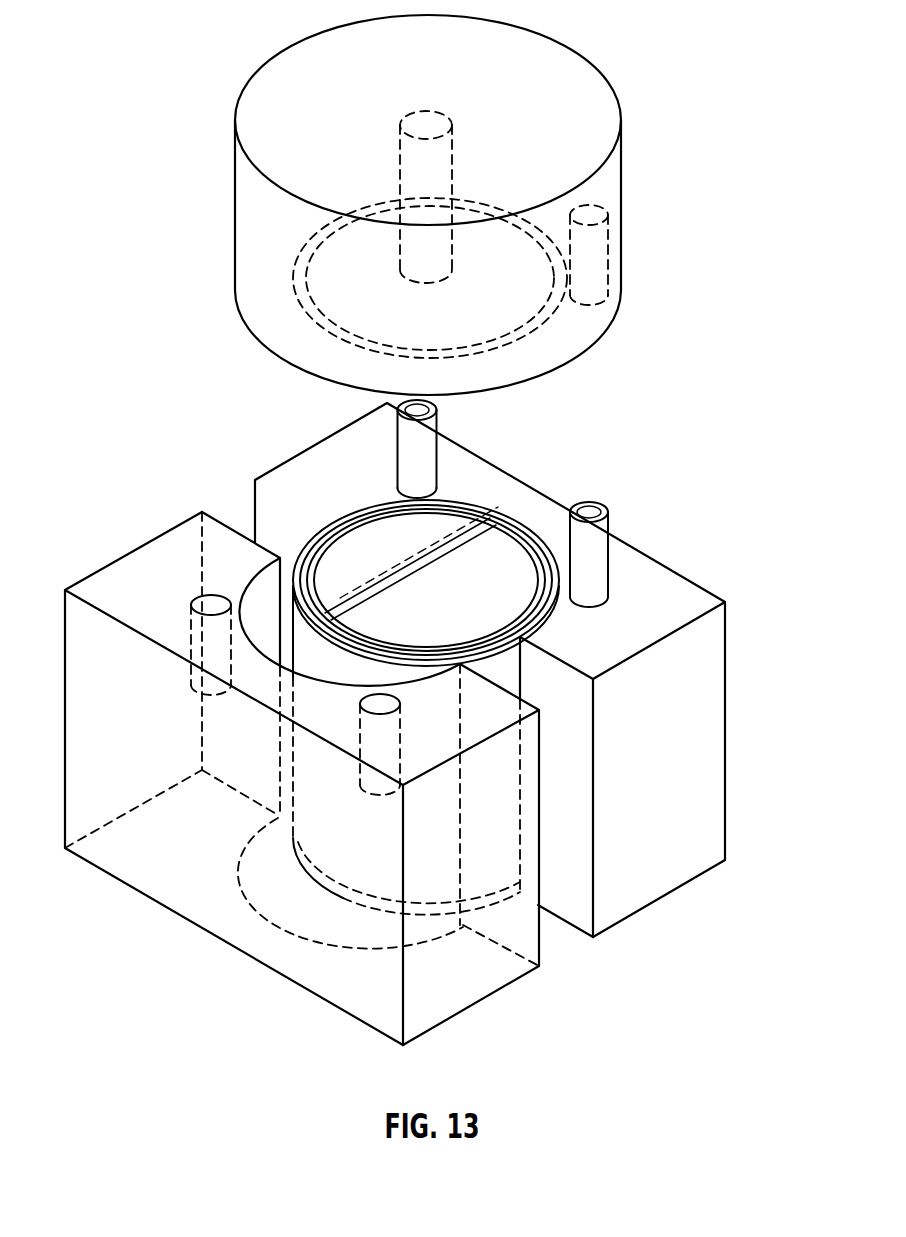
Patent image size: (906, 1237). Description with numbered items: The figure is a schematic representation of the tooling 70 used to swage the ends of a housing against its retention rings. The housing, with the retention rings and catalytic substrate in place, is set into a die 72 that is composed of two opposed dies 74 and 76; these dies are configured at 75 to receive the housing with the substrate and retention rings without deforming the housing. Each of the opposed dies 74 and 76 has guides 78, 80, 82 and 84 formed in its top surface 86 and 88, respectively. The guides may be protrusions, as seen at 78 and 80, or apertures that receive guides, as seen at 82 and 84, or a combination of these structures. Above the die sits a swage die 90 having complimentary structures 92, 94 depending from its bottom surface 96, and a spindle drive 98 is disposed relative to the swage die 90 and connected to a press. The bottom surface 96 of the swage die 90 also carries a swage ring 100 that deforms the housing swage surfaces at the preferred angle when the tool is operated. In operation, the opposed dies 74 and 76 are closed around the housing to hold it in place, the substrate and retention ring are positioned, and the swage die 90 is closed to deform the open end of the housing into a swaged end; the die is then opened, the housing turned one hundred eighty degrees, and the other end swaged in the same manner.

The tooling 70 is at (458, 213).
The die 72 is at (417, 722).
The opposed die 74 is at (522, 670).
The receiving configuration 75 is at (248, 612).
The opposed die 76 is at (291, 778).
The guide 78 is at (599, 543).
The guide 80 is at (429, 447).
The guide 82 is at (197, 601).
The guide 84 is at (380, 701).
The top surface 86 is at (600, 640).
The top surface 88 is at (345, 719).
The swage die 90 is at (234, 52).
The complimentary structure 92 is at (433, 161).
The complimentary structure 94 is at (591, 204).
The bottom surface 96 is at (277, 361).
The spindle drive 98 is at (441, 125).
The swage ring 100 is at (533, 336).